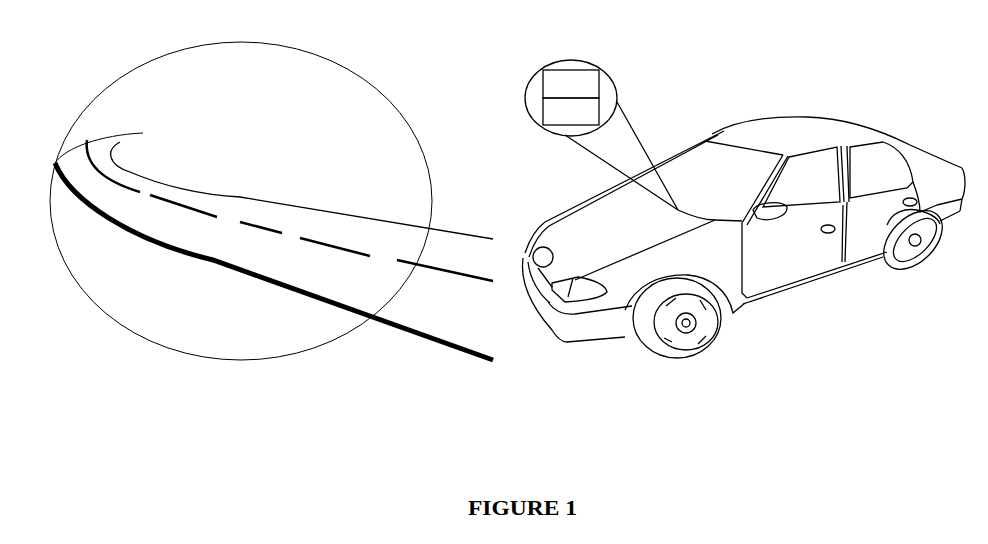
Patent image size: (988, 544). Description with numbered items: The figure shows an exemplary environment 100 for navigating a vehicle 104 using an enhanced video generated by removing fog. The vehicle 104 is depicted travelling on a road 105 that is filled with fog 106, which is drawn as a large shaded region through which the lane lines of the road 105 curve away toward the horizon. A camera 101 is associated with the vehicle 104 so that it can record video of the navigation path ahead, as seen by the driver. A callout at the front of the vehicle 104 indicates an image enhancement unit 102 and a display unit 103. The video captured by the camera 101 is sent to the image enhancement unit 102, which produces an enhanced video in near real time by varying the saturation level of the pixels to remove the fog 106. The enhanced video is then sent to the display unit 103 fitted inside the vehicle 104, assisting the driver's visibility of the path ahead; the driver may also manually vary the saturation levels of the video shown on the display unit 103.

The driving environment 100 is at (467, 45).
The camera 101 is at (548, 300).
The image enhancement unit 102 is at (571, 84).
The display unit 103 is at (571, 111).
The vehicle 104 is at (870, 127).
The road 105 is at (425, 323).
The fog 106 is at (280, 43).